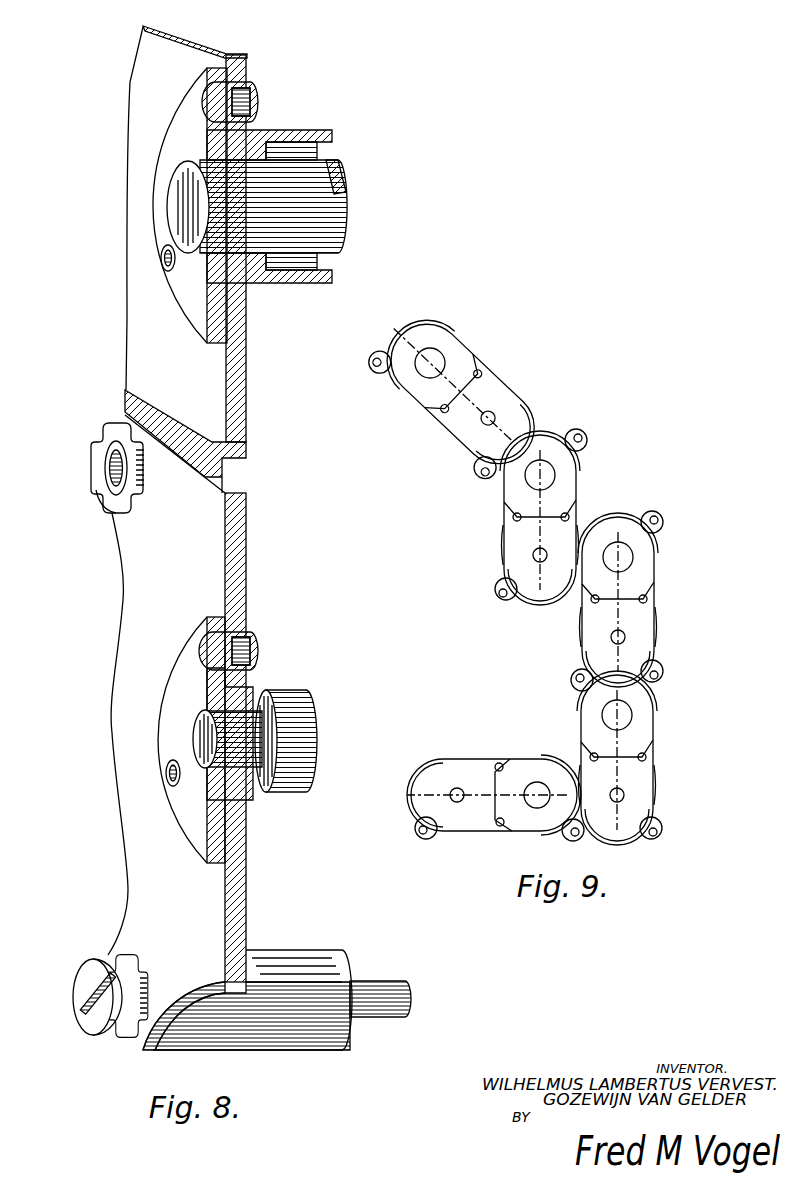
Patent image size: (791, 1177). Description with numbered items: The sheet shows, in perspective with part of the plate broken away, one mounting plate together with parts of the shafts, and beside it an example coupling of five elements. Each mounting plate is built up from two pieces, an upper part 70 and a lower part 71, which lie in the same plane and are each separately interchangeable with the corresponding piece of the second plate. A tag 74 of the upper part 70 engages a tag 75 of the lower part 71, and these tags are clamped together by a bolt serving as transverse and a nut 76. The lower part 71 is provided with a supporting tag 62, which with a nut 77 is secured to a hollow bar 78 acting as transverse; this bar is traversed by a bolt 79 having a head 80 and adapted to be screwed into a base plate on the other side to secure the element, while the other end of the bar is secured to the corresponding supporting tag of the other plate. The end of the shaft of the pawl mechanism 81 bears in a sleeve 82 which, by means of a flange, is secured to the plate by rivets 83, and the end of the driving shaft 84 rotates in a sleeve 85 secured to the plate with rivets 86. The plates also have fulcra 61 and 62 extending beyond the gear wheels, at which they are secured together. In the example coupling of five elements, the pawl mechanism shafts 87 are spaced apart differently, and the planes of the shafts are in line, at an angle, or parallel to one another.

In FIG. 9, the fulcrum 61 is at (383, 358).
In FIG. 8, the supporting tag 62 is at (163, 1049).
In FIG. 9, the supporting tag 62 is at (477, 474).
In FIG. 8, the upper part of plate 70 is at (247, 372).
In FIG. 9, the upper part of plate 70 is at (458, 360).
In FIG. 8, the lower part of plate 71 is at (247, 560).
In FIG. 9, the lower part of plate 71 is at (460, 425).
In FIG. 8, the tag 74 is at (236, 462).
In FIG. 8, the tag 75 is at (118, 423).
In FIG. 8, the nut 76 is at (110, 507).
In FIG. 8, the nut 77 is at (108, 955).
In FIG. 8, the hollow bar 78 is at (276, 1036).
In FIG. 8, the bolt 79 is at (386, 1012).
In FIG. 8, the head 80 is at (93, 1024).
In FIG. 8, the pawl mechanism shaft 81 is at (168, 200).
In FIG. 8, the sleeve 82 is at (273, 130).
In FIG. 8, the rivets 83 is at (255, 90).
In FIG. 8, the driving shaft 84 is at (192, 738).
In FIG. 8, the sleeve 85 is at (262, 690).
In FIG. 8, the rivets 86 is at (253, 648).
In FIG. 9, the pawl mechanism shafts 87 is at (418, 368).